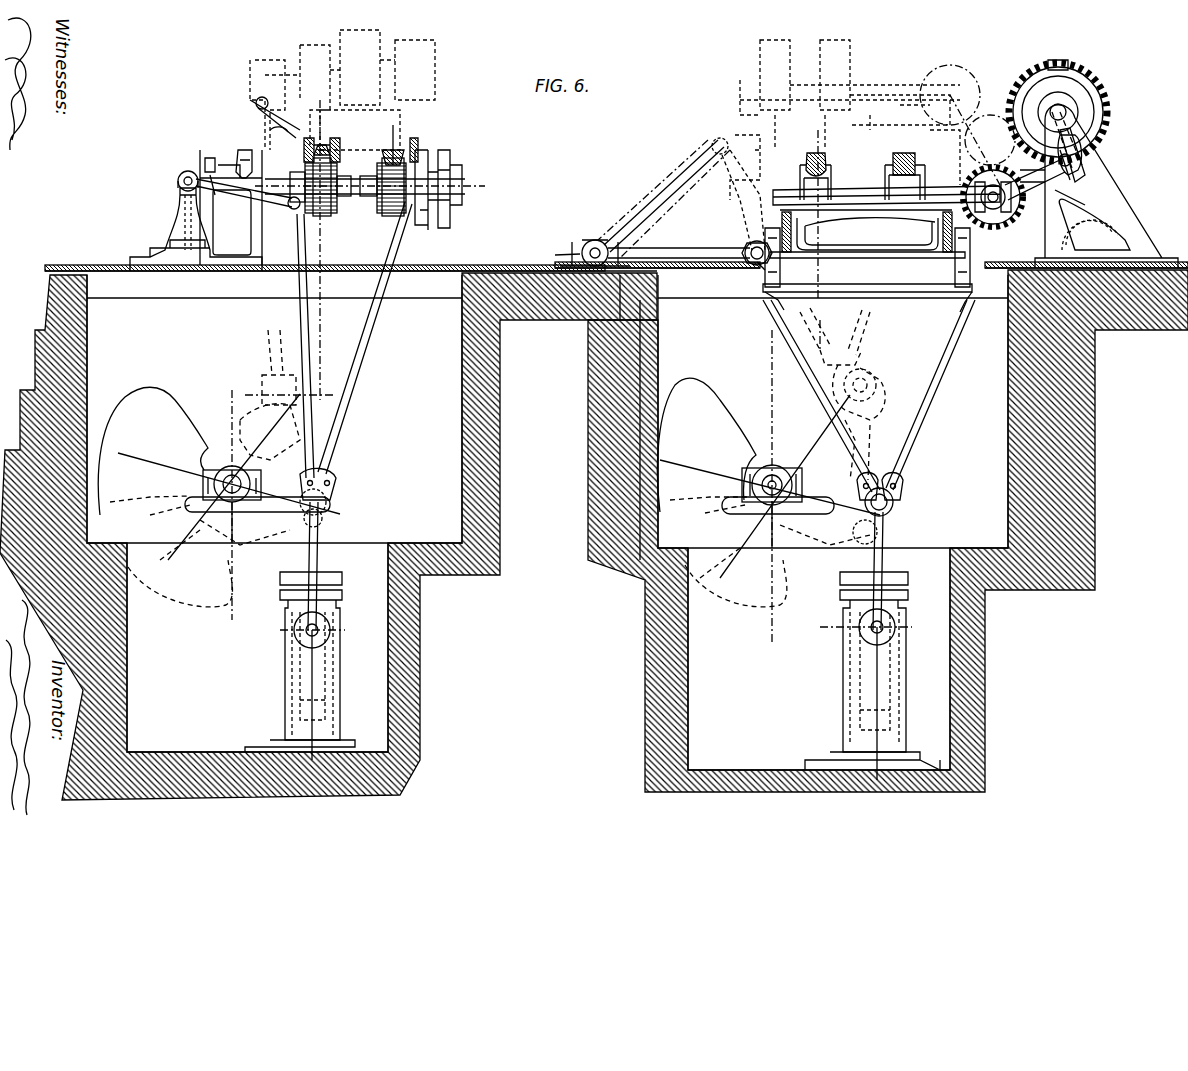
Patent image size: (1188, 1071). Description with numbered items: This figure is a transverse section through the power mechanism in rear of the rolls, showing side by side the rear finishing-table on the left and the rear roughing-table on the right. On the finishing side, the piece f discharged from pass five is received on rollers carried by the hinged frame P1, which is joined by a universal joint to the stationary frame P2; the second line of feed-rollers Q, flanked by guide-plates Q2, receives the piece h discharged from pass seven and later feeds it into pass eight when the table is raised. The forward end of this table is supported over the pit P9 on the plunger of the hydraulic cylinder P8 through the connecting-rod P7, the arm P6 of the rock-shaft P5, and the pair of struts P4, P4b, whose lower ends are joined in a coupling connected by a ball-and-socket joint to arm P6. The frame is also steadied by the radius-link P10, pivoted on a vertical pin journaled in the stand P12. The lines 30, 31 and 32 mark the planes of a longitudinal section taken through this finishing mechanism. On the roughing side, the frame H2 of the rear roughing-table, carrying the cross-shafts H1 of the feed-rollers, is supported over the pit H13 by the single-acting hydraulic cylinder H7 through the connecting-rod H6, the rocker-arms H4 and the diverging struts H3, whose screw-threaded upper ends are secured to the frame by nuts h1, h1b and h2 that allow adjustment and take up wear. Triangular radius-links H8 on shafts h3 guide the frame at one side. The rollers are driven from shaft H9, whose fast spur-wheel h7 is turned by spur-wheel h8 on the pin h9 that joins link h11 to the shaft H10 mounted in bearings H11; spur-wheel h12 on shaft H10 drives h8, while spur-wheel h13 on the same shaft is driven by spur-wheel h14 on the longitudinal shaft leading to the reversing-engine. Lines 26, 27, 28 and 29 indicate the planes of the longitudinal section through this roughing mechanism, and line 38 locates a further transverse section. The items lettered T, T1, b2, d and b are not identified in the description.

The strut P4 is at (176, 182).
The stand P12 is at (158, 252).
The radius-link P10 is at (248, 198).
The frame bracket T is at (208, 162).
The stop T1 is at (245, 156).
The feed-rollers Q is at (370, 187).
The guide-plates Q2 is at (306, 150).
The stationary frame P2 is at (378, 152).
The frame P1 is at (296, 160).
The piece f is at (393, 140).
The bracket plate b2 is at (416, 136).
The section line 38 is at (320, 142).
The piece h is at (326, 140).
The pitman rods P4b is at (305, 250).
The rock-shaft P5 is at (268, 428).
The arm P6 is at (300, 462).
The connecting-rod P7 is at (316, 560).
The hydraulic cylinder P8 is at (342, 652).
The pit P9 is at (274, 513).
The section line 30 is at (228, 614).
The section line 31 is at (273, 503).
The section line 32 is at (296, 372).
The shaft h3 is at (590, 250).
The nut h1 is at (572, 250).
The pivot pin h1b is at (763, 246).
The radius-links H8 is at (679, 243).
The frame H2 is at (776, 212).
The nut h2 is at (758, 284).
The section line 29 is at (816, 208).
The friction block d is at (828, 166).
The cross-shaft H1 is at (886, 188).
The friction block b is at (912, 156).
The shaft H9 is at (980, 226).
The spur-wheel h7 is at (1000, 244).
The shaft H10 is at (1102, 92).
The spur-wheel h13 is at (1074, 70).
The spur-wheel h12 is at (1108, 104).
The link h11 is at (1095, 142).
The spur-wheel h8 is at (1112, 163).
The pin h9 is at (1118, 184).
The spur-wheel h14 is at (1090, 235).
The bearings H11 is at (1125, 216).
The struts H3 is at (812, 368).
The rocker-arms H4 is at (855, 475).
The connecting-rod H6 is at (880, 562).
The hydraulic cylinder H7 is at (906, 655).
The pit H13 is at (814, 522).
The section line 26 is at (772, 640).
The section line 27 is at (800, 345).
The section line 28 is at (829, 336).